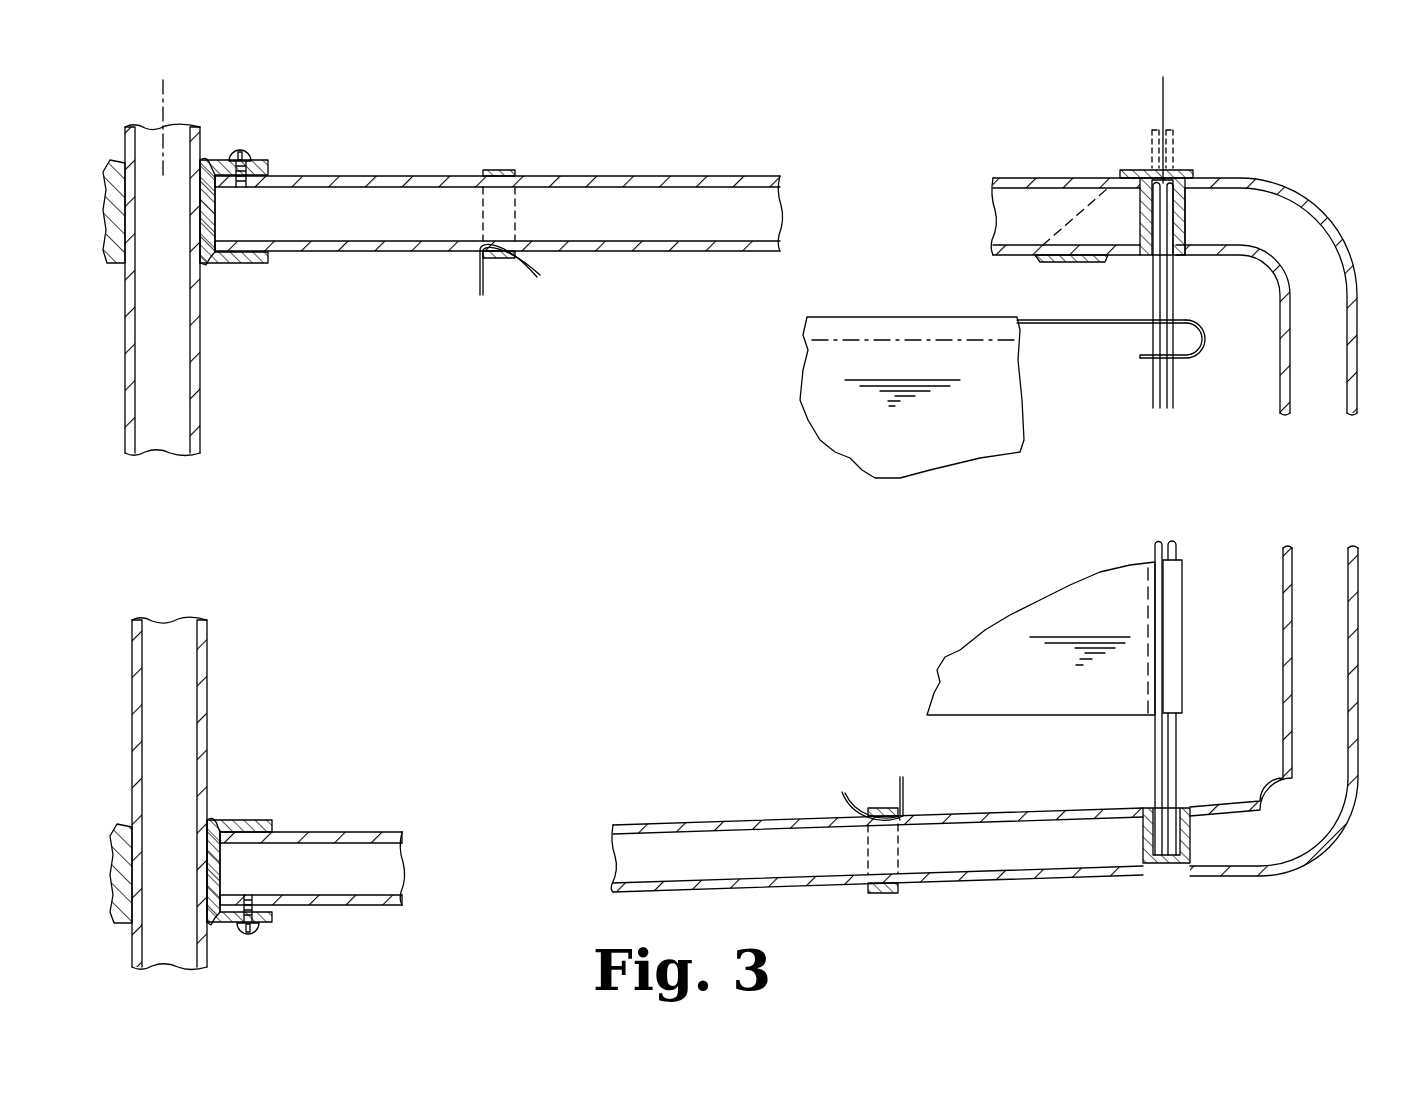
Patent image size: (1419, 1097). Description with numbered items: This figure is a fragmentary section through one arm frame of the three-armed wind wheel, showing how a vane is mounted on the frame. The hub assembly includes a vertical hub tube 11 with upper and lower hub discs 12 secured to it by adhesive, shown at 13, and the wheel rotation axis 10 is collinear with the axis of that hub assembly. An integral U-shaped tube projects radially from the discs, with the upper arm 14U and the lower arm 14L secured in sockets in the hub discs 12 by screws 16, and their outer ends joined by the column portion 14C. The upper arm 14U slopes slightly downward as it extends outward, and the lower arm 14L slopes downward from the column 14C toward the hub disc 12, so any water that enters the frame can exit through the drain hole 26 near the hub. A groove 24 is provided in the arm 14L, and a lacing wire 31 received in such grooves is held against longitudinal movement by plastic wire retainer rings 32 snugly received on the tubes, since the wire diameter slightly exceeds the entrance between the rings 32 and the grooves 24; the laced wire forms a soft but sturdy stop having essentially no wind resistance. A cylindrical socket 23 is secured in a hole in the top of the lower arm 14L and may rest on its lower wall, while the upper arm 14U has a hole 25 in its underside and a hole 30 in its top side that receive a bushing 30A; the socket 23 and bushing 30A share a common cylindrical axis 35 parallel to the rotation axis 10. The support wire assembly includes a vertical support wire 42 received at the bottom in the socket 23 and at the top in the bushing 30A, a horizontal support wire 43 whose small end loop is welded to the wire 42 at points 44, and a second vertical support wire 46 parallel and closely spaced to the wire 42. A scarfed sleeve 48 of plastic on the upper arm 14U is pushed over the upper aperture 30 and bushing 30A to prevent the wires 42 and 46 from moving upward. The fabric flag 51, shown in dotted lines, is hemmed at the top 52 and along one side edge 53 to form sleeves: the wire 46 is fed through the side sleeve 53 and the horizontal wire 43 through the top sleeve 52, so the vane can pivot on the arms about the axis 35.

The wheel rotation axis 10 is at (167, 98).
The vertical hub tube 11 is at (202, 385).
The hub disc 12 is at (248, 262).
The adhesive 13 is at (125, 168).
The upper arm 14U is at (400, 177).
The lower arm 14L is at (360, 832).
The column portion 14C is at (1358, 325).
The screw 16 is at (246, 155).
The socket 23 is at (1185, 808).
The groove 24 is at (900, 820).
The hole 25 is at (1183, 256).
The drain hole 26 is at (330, 905).
The hole 30 is at (1192, 178).
The bushing 30A is at (1187, 212).
The lacing wire 31 is at (540, 280).
The wire retainer ring 32 is at (497, 170).
The cylindrical axis 35 is at (1166, 97).
The vertical support wire 42 is at (1153, 398).
The horizontal support wire 43 is at (1050, 325).
The weld point 44 is at (1150, 320).
The vertical support wire 46 is at (1176, 388).
The scarfed sleeve 48 is at (1045, 262).
The flag 51 is at (926, 455).
The top hem 52 is at (840, 340).
The side edge hem 53 is at (1148, 610).